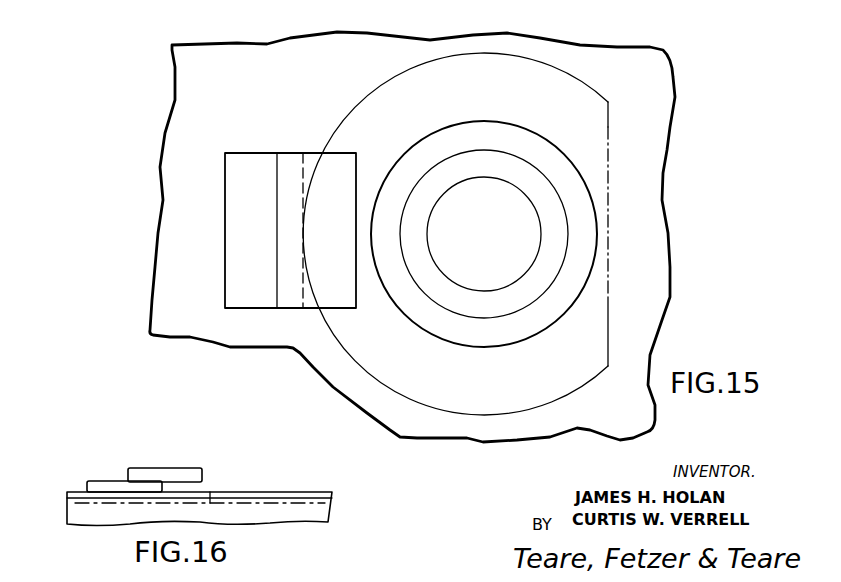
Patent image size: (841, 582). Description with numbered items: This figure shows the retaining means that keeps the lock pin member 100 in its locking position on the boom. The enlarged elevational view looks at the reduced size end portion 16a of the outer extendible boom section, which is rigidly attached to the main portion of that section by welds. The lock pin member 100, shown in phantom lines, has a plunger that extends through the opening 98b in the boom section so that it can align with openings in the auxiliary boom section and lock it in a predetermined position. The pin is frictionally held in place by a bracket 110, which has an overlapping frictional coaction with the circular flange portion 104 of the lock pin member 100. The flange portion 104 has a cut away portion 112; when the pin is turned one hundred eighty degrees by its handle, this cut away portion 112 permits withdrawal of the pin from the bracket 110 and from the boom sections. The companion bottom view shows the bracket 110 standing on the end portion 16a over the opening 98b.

In FIG. 15, the reduced size end portion 16a is at (268, 48).
In FIG. 16, the reduced size end portion 16a is at (76, 492).
In FIG. 15, the lock pin member 100 is at (582, 76).
In FIG. 15, the flange portion 104 is at (502, 78).
In FIG. 15, the opening 98b is at (553, 143).
In FIG. 16, the opening 98b is at (252, 502).
In FIG. 15, the cut away portion 112 is at (608, 296).
In FIG. 15, the bracket 110 is at (260, 278).
In FIG. 16, the bracket 110 is at (182, 467).